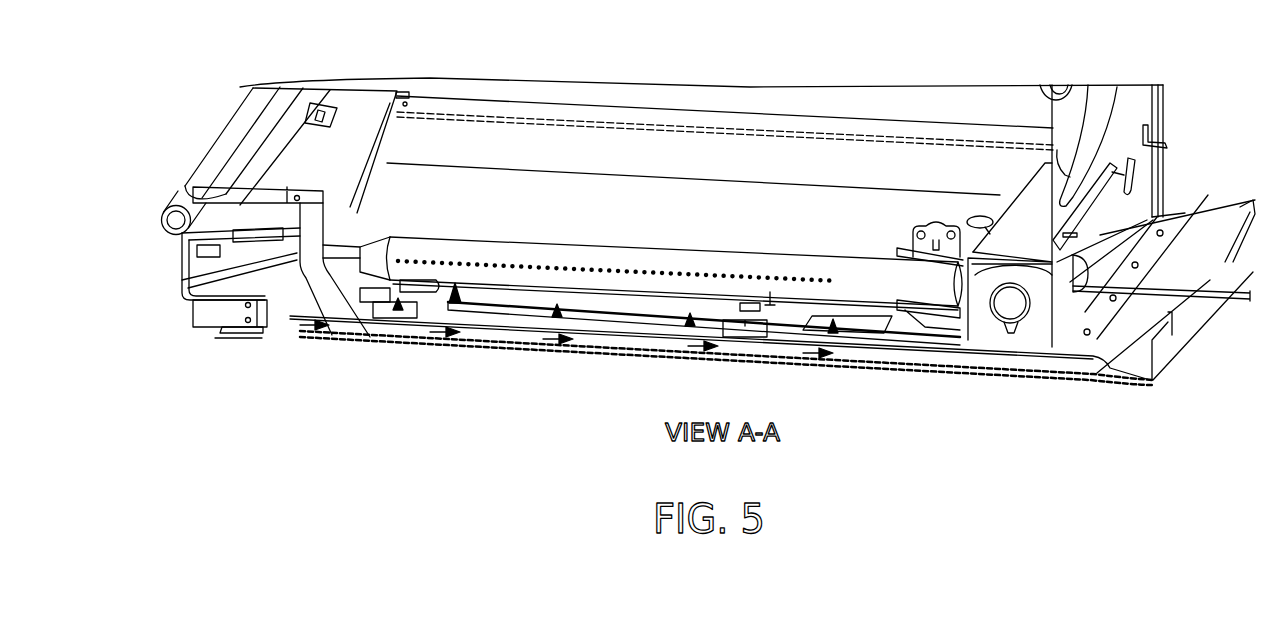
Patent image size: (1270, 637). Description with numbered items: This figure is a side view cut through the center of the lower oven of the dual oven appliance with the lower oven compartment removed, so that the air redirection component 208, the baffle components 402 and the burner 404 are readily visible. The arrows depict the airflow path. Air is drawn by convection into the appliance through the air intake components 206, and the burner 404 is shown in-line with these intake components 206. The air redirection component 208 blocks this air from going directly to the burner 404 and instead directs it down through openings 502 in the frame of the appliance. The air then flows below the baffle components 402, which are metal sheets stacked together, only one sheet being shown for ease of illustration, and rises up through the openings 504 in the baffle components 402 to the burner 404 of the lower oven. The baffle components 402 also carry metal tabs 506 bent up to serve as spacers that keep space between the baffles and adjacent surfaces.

The air redirection component 208 is at (360, 100).
The air intake components 206 is at (190, 217).
The baffle components 402 is at (338, 300).
The openings 502 is at (230, 302).
The metal tabs 506 is at (412, 335).
The openings 504 is at (515, 315).
The burner 404 is at (877, 280).